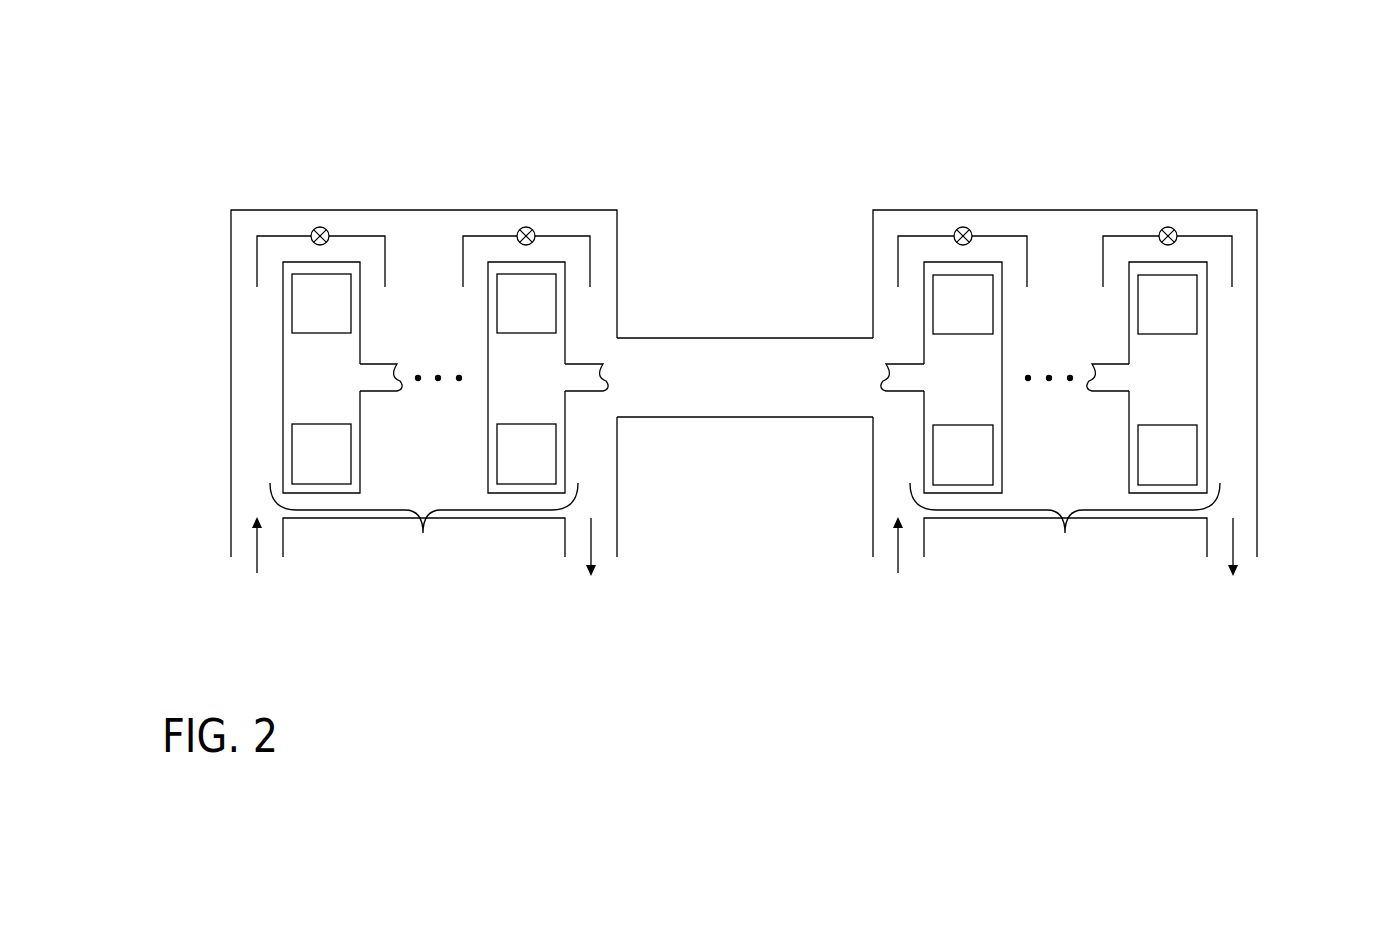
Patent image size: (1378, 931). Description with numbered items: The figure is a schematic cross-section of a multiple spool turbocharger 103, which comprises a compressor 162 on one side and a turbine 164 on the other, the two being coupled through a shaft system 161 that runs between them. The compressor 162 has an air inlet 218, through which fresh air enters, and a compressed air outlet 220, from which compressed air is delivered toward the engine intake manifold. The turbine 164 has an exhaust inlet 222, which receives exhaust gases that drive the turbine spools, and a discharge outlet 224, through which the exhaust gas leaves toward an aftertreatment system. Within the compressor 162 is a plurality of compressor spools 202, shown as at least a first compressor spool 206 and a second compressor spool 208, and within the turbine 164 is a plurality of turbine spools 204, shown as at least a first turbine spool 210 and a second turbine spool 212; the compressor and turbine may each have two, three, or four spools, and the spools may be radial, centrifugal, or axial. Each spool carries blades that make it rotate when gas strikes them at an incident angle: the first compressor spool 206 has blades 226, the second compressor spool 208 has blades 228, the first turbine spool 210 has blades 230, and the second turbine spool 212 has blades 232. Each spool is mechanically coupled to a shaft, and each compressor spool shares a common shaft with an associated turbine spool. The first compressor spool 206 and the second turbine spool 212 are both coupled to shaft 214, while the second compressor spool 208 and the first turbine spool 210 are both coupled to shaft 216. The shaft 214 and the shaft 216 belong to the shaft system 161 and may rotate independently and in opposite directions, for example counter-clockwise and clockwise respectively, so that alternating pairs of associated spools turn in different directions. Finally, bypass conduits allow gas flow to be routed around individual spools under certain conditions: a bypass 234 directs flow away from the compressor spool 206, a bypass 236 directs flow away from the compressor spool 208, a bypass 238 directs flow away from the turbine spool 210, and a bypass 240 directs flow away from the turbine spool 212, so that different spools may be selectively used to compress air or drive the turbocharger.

The multiple spool turbocharger 103 is at (1311, 108).
The shaft system 161 is at (731, 305).
The compressor 162 is at (423, 172).
The turbine 164 is at (1064, 172).
The plurality of compressor spools 202 is at (381, 412).
The plurality of turbine spools 204 is at (1114, 412).
The first compressor spool 206 is at (281, 355).
The second compressor spool 208 is at (487, 343).
The first turbine spool 210 is at (1002, 343).
The second turbine spool 212 is at (1207, 380).
The shaft 214 is at (386, 393).
The shaft 216 is at (590, 393).
The air inlet 218 is at (258, 560).
The compressed air outlet 220 is at (592, 560).
The exhaust inlet 222 is at (898, 561).
The discharge outlet 224 is at (1233, 561).
The blades 226 is at (321, 379).
The blades 228 is at (526, 379).
The blades 230 is at (963, 380).
The blades 232 is at (1167, 380).
The bypass 234 is at (283, 233).
The bypass 236 is at (564, 233).
The bypass 238 is at (918, 233).
The bypass 240 is at (1207, 233).